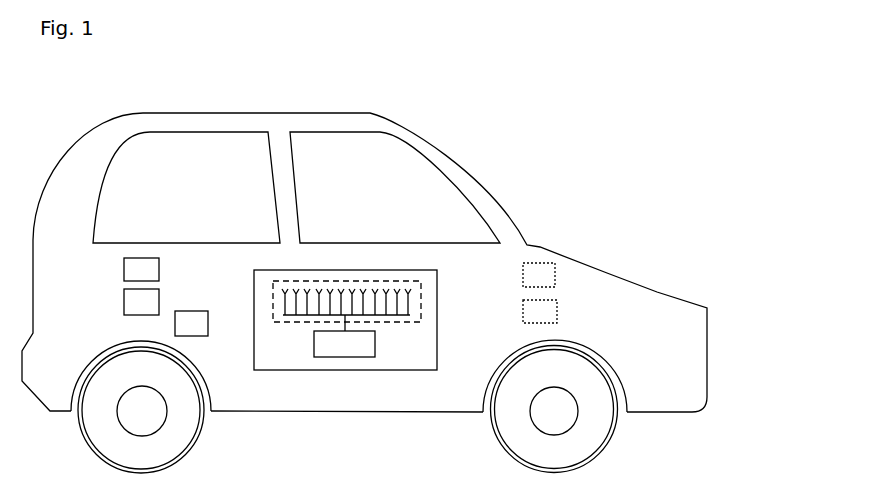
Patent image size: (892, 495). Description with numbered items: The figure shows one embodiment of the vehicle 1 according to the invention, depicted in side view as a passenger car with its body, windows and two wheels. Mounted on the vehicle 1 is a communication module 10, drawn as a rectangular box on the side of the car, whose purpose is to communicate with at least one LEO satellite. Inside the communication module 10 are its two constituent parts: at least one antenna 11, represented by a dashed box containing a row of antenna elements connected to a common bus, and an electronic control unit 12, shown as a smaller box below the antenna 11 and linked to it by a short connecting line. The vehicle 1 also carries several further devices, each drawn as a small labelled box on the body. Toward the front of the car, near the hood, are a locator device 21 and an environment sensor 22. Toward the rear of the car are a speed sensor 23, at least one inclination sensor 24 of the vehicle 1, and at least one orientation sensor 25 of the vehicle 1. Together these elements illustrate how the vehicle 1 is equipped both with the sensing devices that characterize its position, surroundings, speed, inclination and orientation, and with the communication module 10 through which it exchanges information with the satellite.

The vehicle 1 is at (488, 174).
The communication module 10 is at (444, 305).
The antenna 11 is at (278, 301).
The electronic control unit 12 is at (347, 354).
The locator device 21 is at (539, 275).
The environment sensor 22 is at (540, 311).
The speed sensor 23 is at (141, 269).
The inclination sensor 24 is at (141, 302).
The orientation sensor 25 is at (191, 323).